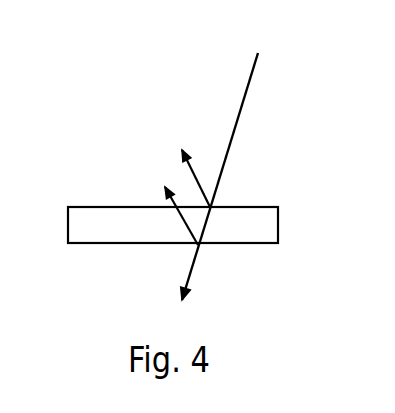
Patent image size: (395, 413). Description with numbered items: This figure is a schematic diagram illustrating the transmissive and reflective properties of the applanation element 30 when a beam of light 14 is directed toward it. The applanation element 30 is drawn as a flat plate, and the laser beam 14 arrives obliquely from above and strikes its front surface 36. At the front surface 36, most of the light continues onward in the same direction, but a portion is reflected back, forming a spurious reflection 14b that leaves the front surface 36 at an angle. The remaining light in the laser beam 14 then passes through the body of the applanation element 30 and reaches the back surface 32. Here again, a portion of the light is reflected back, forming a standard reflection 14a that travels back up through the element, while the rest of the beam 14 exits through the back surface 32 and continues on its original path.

The beam of light 14 is at (242, 105).
The standard reflection 14a is at (172, 200).
The spurious reflection 14b is at (190, 168).
The applanation element 30 is at (237, 225).
The back surface 32 is at (140, 245).
The front surface 36 is at (247, 207).